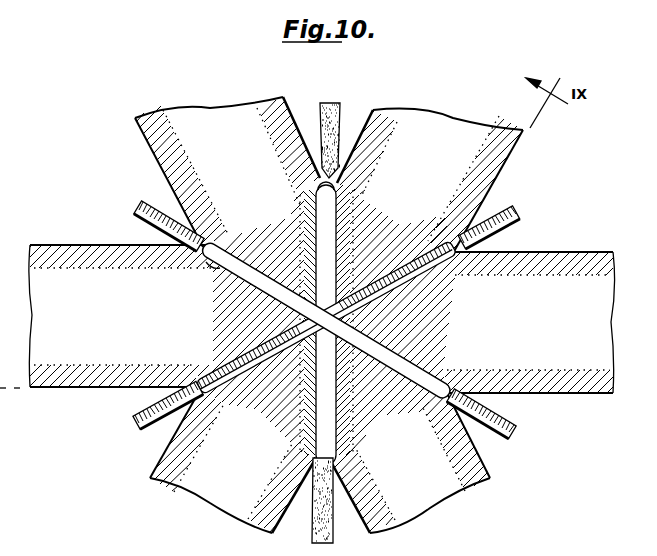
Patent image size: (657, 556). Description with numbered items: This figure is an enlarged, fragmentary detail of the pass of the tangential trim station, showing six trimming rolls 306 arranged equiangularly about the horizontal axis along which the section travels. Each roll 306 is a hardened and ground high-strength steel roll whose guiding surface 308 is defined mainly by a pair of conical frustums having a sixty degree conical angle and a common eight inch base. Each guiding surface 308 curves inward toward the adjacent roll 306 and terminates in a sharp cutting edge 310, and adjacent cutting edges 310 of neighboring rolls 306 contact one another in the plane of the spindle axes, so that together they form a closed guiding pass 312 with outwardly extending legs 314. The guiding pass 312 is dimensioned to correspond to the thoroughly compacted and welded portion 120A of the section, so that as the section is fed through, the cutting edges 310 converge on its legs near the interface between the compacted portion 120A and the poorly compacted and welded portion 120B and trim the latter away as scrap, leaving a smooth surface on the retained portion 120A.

The thoroughly compacted and welded portion 120A is at (404, 277).
The poorly compacted and welded portion 120B is at (337, 104).
The trimming roll 306 is at (116, 333).
The guiding surface 308 is at (331, 227).
The cutting edge 310 is at (327, 185).
The guiding pass 312 is at (255, 302).
The outwardly extending leg 314 is at (213, 268).